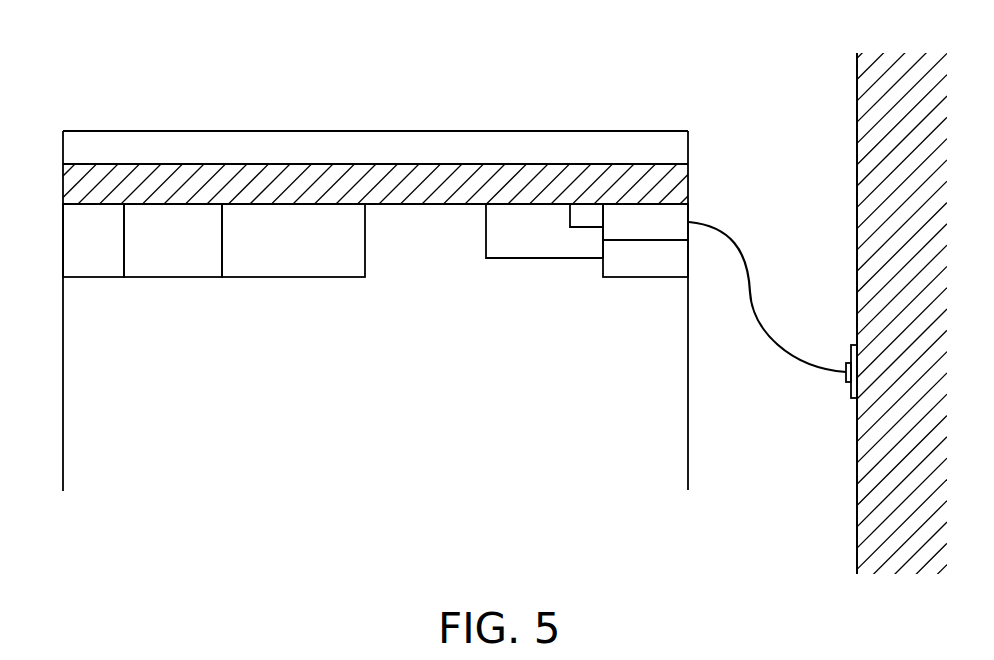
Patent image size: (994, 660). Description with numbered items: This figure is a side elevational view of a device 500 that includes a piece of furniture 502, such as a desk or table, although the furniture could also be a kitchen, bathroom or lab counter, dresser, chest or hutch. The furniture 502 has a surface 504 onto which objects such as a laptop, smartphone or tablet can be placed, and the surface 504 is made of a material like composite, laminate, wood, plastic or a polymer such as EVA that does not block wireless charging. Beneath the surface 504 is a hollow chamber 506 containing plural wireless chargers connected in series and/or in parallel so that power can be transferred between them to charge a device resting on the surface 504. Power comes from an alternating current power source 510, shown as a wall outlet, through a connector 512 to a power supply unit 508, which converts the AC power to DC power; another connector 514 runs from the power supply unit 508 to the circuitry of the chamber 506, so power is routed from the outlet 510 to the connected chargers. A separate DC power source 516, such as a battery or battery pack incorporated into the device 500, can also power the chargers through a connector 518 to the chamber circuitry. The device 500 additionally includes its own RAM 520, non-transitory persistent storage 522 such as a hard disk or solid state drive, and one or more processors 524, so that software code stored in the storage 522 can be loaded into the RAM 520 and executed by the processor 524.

The device 500 is at (112, 27).
The piece of furniture 502 is at (623, 130).
The surface 504 is at (113, 148).
The hollow chamber 506 is at (689, 183).
The power supply unit 508 is at (689, 210).
The alternating current power source 510 is at (851, 348).
The connector 512 is at (747, 262).
The connector 514 is at (569, 226).
The DC power source 516 is at (645, 278).
The connector 518 is at (545, 259).
The RAM 520 is at (92, 280).
The non-transitory persistent storage 522 is at (168, 280).
The processor 524 is at (290, 280).